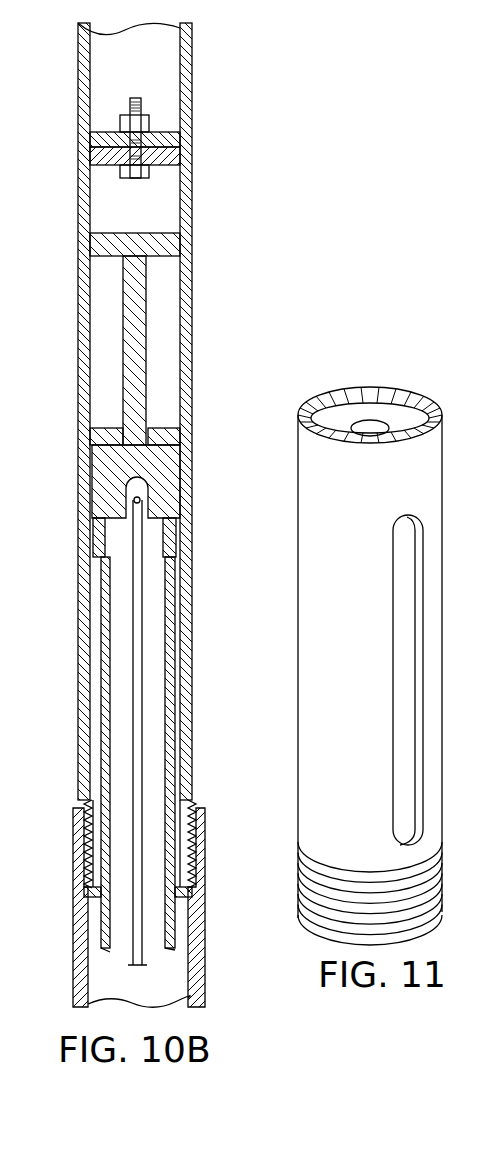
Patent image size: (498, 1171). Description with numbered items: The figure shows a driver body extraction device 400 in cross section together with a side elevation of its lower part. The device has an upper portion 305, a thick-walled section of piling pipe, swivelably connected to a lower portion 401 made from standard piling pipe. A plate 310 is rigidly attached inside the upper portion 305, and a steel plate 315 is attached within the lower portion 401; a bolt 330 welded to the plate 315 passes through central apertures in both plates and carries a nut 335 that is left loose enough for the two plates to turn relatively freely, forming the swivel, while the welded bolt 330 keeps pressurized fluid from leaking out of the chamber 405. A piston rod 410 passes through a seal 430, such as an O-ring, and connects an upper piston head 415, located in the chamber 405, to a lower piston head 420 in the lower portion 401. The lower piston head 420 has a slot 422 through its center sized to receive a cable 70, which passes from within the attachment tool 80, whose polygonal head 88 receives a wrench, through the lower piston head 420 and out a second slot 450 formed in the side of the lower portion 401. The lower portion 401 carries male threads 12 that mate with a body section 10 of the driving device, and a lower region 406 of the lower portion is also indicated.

In FIG. 10B, the body section 10 is at (74, 912).
In FIG. 10B, the male thread 12 is at (82, 830).
In FIG. 11, the male thread 12 is at (305, 885).
In FIG. 10B, the cable 70 is at (143, 610).
In FIG. 10B, the attachment tool 80 is at (80, 658).
In FIG. 10B, the polygonal shaped head 88 is at (95, 537).
In FIG. 10B, the upper portion 305 is at (194, 63).
In FIG. 10B, the plate 310 is at (184, 140).
In FIG. 10B, the steel plate 315 is at (184, 156).
In FIG. 10B, the bolt 330 is at (150, 172).
In FIG. 10B, the nut 335 is at (120, 128).
In FIG. 10B, the driver body extraction device 400 is at (234, 356).
In FIG. 10B, the lower portion 401 is at (194, 314).
In FIG. 11, the lower portion 401 is at (297, 562).
In FIG. 10B, the chamber 405 is at (158, 215).
In FIG. 10B, the lower tube section 406 is at (180, 722).
In FIG. 10B, the piston rod 410 is at (123, 351).
In FIG. 10B, the upper piston head 415 is at (96, 245).
In FIG. 10B, the lower piston head 420 is at (100, 455).
In FIG. 10B, the slot 422 is at (127, 491).
In FIG. 10B, the seal 430 is at (110, 432).
In FIG. 11, the seal 430 is at (379, 408).
In FIG. 11, the second slot 450 is at (395, 688).